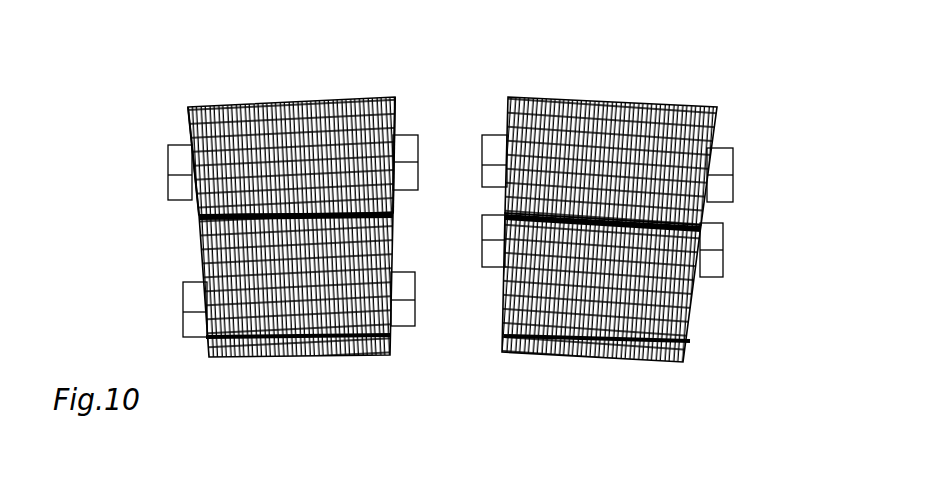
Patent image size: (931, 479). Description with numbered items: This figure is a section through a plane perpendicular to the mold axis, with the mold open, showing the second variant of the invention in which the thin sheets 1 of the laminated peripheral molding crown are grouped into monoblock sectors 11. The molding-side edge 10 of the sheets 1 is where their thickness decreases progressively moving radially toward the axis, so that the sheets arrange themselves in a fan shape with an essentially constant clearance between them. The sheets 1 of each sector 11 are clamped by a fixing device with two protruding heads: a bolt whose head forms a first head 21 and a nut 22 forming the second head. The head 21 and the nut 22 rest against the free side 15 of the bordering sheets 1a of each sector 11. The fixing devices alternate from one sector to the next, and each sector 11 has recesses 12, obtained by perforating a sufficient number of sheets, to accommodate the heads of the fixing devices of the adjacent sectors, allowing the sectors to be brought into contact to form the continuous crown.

The sheets 1 is at (303, 100).
The bordering sheets 1a is at (190, 105).
The edge of the sheets 10 is at (335, 357).
The sector 11 is at (350, 63).
The recesses 12 is at (500, 325).
The free side of the sheets 15 is at (193, 210).
The first head 21 is at (180, 173).
The nut 22 is at (420, 150).